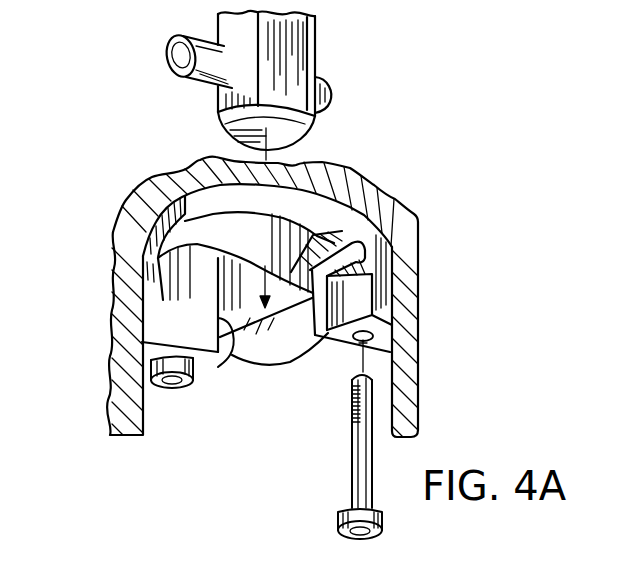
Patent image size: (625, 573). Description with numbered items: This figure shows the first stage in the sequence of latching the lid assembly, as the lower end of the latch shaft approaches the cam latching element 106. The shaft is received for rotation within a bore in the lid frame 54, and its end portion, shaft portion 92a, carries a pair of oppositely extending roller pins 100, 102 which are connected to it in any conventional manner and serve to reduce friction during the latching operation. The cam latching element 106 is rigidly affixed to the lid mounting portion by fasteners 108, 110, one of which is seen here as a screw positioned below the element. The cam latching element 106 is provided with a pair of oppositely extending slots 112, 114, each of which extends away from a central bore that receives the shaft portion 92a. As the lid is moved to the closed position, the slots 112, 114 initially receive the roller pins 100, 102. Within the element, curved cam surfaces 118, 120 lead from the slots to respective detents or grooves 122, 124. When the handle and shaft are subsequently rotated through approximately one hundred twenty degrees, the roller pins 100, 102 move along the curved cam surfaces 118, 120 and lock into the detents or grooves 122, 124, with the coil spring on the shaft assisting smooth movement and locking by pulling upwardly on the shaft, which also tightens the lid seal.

The shaft portion 92a is at (297, 40).
The roller pin 100 is at (167, 57).
The roller pin 102 is at (332, 82).
The cam latching element 106 is at (360, 204).
The lid frame 54 is at (122, 352).
The curved cam surface 118 is at (205, 229).
The slot 112 is at (148, 243).
The detent or groove 122 is at (370, 237).
The curved cam surface 120 is at (265, 358).
The detent or groove 124 is at (217, 347).
The slot 114 is at (296, 300).
The fastener 108 is at (172, 390).
The fastener 110 is at (338, 515).